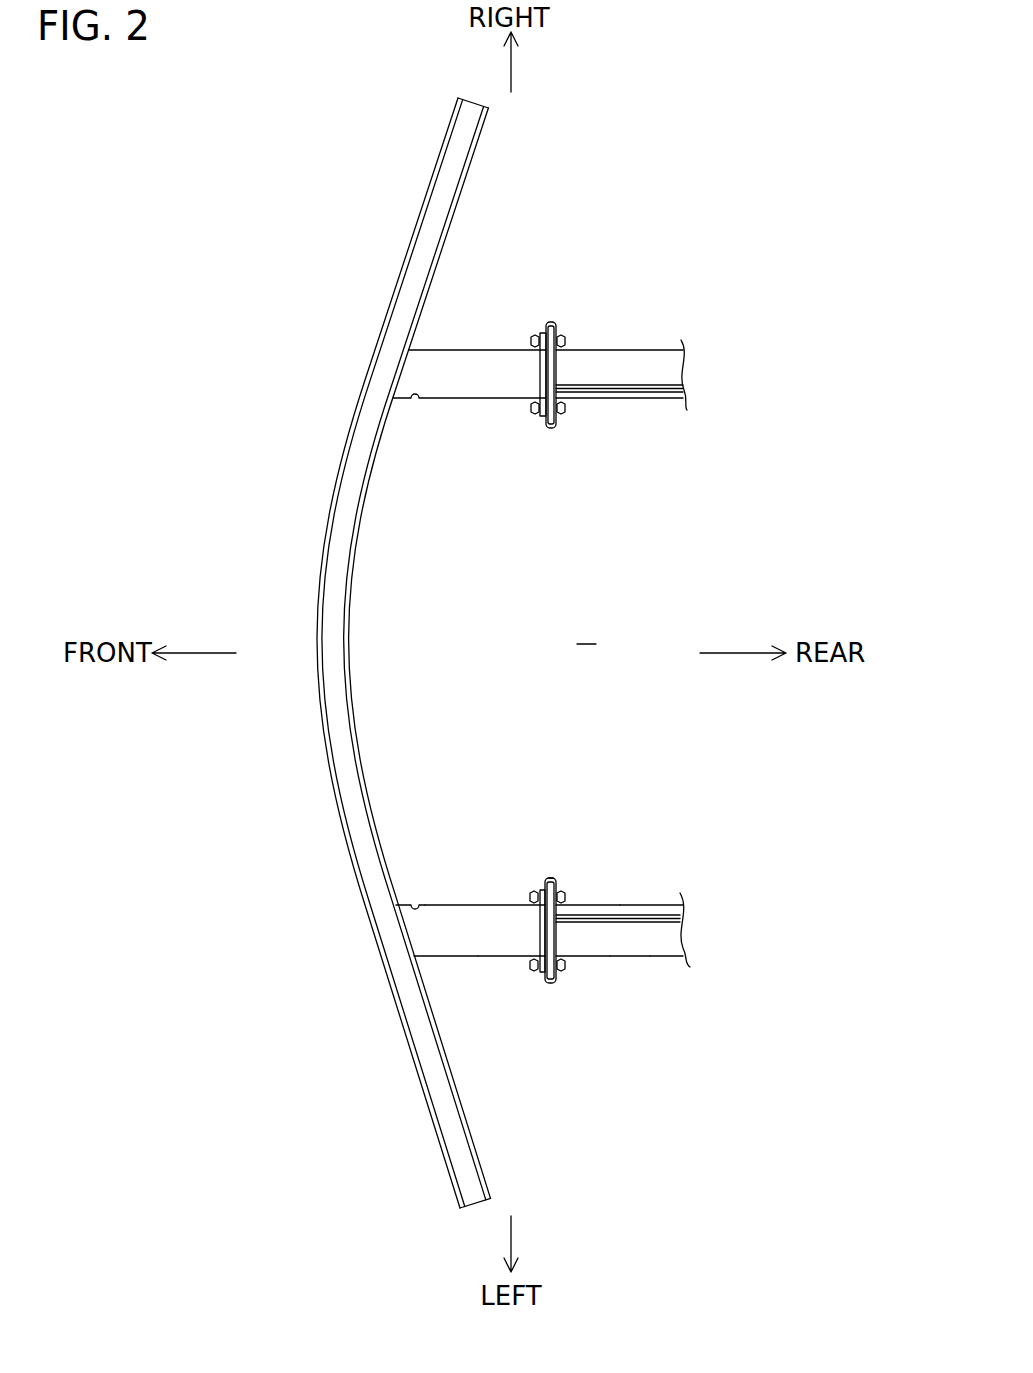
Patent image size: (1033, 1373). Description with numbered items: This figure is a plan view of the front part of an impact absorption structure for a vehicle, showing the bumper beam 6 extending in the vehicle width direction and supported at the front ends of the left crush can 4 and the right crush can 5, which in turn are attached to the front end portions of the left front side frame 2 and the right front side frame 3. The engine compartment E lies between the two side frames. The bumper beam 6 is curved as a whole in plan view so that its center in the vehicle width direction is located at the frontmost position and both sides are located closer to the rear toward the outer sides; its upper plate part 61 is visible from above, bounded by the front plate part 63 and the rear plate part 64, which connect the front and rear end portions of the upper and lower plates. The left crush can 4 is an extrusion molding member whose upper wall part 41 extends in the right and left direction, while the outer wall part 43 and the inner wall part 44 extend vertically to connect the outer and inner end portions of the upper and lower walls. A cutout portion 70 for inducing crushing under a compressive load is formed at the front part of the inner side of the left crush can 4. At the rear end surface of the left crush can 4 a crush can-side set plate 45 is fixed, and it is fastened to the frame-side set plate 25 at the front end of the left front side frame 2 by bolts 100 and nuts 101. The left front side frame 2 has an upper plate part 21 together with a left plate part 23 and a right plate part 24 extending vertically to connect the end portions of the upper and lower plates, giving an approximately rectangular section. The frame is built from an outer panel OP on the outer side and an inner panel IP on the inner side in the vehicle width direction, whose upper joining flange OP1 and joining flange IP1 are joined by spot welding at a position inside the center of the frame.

The left front side frame 2 is at (655, 931).
The right front side frame 3 is at (605, 340).
The left crush can 4 is at (471, 932).
The right crush can 5 is at (497, 340).
The bumper beam 6 is at (369, 653).
The upper plate part 21 is at (676, 958).
The left plate part 23 is at (588, 958).
The right plate part 24 is at (590, 904).
The frame-side set plate 25 is at (553, 877).
The upper wall part 41 is at (467, 958).
The outer wall part 43 is at (487, 960).
The inner wall part 44 is at (487, 904).
The crush can-side set plate 45 is at (535, 925).
The upper plate part 61 is at (368, 420).
The front plate part 63 is at (318, 739).
The rear plate part 64 is at (352, 684).
The cutout portion 70 is at (413, 903).
The bolt 100 is at (560, 898).
The nut 101 is at (538, 896).
The engine compartment E is at (586, 629).
The inner panel IP is at (658, 904).
The joining flange IP1 is at (673, 912).
The outer panel OP is at (626, 958).
The joining flange OP1 is at (650, 944).